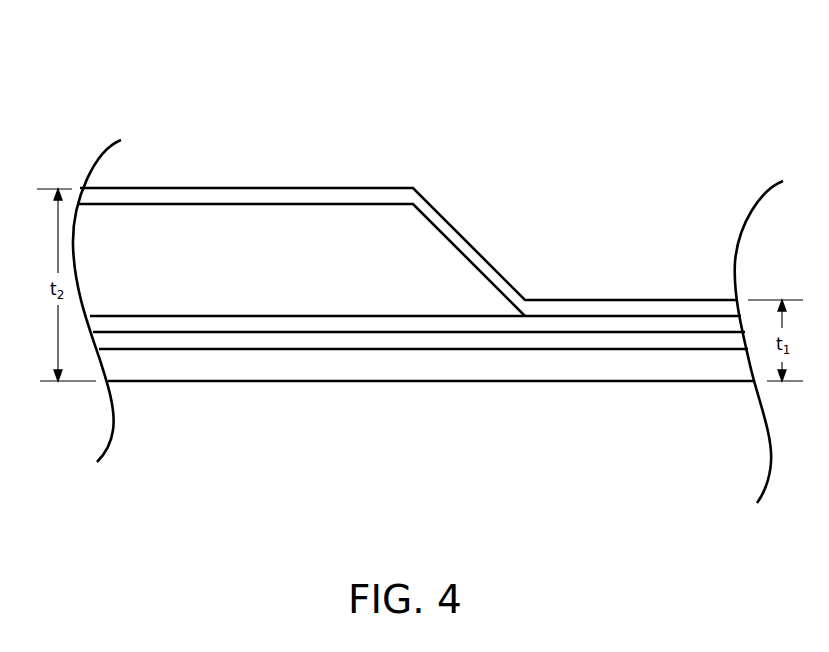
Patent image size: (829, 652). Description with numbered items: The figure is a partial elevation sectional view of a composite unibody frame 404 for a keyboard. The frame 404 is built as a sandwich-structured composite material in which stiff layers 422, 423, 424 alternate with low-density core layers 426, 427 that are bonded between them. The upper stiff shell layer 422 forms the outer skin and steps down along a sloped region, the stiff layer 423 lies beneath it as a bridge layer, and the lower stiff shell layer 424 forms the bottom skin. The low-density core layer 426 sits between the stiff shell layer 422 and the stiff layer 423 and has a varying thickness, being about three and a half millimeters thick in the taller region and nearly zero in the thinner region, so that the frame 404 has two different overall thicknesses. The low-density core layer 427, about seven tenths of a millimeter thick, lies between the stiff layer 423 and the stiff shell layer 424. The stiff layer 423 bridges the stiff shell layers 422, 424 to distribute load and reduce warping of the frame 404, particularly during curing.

The composite unibody frame 404 is at (332, 146).
The stiff shell layer 422 is at (495, 279).
The stiff layer 423 is at (323, 323).
The stiff shell layer 424 is at (431, 367).
The low-density core layer 426 is at (415, 286).
The low-density core layer 427 is at (565, 342).